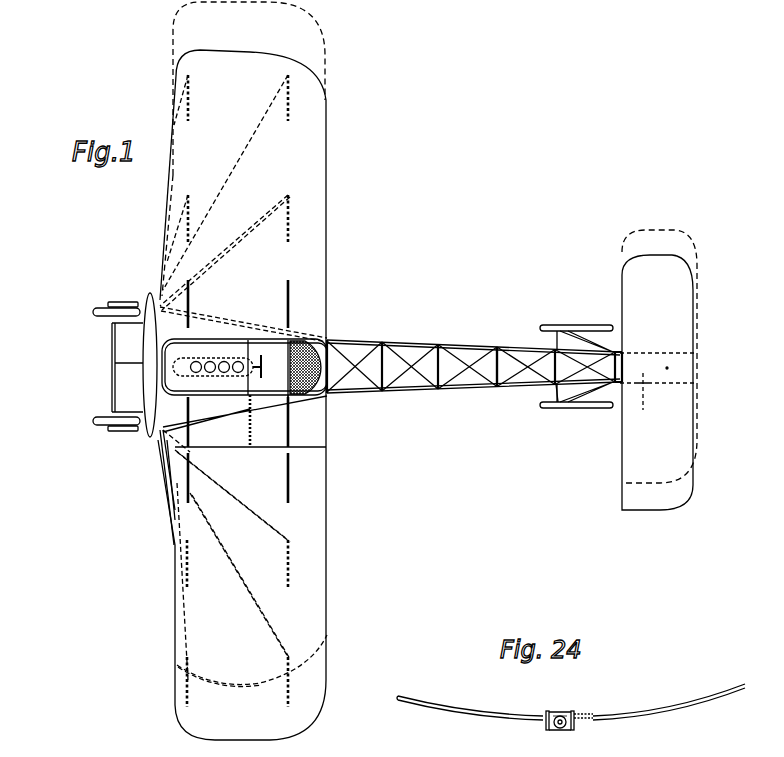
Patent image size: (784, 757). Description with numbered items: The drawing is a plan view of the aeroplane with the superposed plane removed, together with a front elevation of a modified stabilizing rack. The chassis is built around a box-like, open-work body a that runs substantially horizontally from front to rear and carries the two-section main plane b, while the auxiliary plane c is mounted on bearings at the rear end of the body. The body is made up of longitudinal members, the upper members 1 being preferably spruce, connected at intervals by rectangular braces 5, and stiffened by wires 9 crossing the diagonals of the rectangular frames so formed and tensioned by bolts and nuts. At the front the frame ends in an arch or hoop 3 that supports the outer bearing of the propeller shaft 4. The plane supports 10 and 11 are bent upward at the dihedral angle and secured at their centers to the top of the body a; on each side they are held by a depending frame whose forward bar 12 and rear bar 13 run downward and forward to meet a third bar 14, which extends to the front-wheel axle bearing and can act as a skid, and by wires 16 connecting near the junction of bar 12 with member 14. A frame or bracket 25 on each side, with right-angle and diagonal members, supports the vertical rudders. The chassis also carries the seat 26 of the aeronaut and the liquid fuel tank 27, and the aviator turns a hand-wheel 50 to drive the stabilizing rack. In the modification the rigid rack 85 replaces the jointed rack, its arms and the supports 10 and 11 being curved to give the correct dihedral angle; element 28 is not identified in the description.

In FIG. 1, the upper longitudinal member 1 is at (150, 384).
In FIG. 1, the arch or hoop 3 is at (244, 378).
In FIG. 1, the propeller shaft 4 is at (210, 360).
In FIG. 1, the rectangular brace 5 is at (495, 340).
In FIG. 1, the wire 9 is at (109, 368).
In FIG. 1, the plane support 10 is at (195, 433).
In FIG. 1, the plane support 11 is at (295, 433).
In FIG. 1, the forward bar 12 is at (170, 452).
In FIG. 1, the rear bar 13 is at (215, 478).
In FIG. 1, the third bar 14 is at (267, 406).
In FIG. 1, the wire 16 is at (172, 522).
In FIG. 1, the frame or bracket 25 is at (558, 388).
In FIG. 1, the seat 26 is at (330, 340).
In FIG. 1, the liquid fuel tank 27 is at (205, 362).
In FIG. 1, the lower wing trailing edge 28 is at (219, 661).
In FIG. 1, the hand-wheel 50 is at (269, 363).
In FIG. 24, the rigid rack 85 is at (583, 713).
In FIG. 1, the body a is at (516, 368).
In FIG. 24, the body a is at (569, 726).
In FIG. 1, the main plane b is at (242, 371).
In FIG. 24, the main plane b is at (571, 702).
In FIG. 1, the auxiliary plane c is at (658, 370).